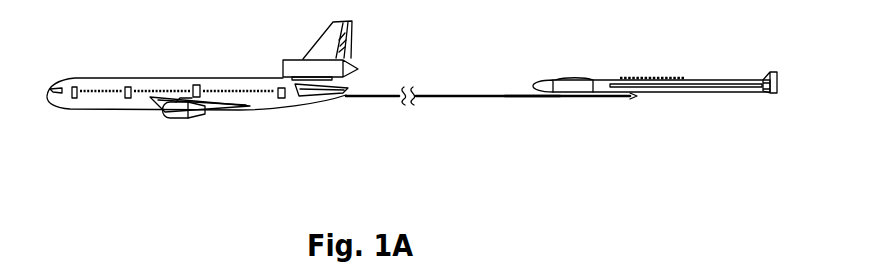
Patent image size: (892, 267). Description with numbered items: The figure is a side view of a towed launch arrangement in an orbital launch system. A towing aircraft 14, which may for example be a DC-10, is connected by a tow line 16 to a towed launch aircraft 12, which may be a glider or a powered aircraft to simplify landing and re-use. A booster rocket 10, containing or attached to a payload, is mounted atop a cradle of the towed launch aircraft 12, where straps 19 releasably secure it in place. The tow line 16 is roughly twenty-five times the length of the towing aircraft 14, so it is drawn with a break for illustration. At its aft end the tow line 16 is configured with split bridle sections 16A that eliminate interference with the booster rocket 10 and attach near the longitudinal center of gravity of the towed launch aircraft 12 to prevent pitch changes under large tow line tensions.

The towing aircraft 14 is at (102, 77).
The tow line 16 is at (380, 95).
The split bridle sections 16A is at (525, 97).
The booster rocket 10 is at (545, 77).
The towed launch aircraft 12 is at (707, 90).
The straps 19 is at (673, 78).